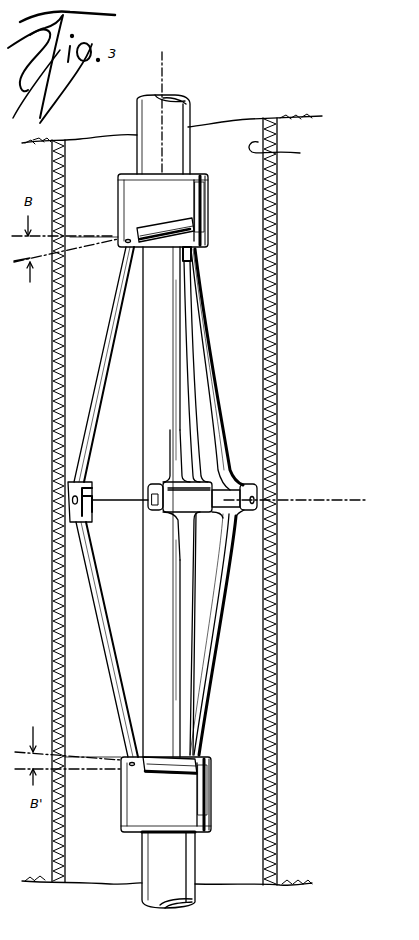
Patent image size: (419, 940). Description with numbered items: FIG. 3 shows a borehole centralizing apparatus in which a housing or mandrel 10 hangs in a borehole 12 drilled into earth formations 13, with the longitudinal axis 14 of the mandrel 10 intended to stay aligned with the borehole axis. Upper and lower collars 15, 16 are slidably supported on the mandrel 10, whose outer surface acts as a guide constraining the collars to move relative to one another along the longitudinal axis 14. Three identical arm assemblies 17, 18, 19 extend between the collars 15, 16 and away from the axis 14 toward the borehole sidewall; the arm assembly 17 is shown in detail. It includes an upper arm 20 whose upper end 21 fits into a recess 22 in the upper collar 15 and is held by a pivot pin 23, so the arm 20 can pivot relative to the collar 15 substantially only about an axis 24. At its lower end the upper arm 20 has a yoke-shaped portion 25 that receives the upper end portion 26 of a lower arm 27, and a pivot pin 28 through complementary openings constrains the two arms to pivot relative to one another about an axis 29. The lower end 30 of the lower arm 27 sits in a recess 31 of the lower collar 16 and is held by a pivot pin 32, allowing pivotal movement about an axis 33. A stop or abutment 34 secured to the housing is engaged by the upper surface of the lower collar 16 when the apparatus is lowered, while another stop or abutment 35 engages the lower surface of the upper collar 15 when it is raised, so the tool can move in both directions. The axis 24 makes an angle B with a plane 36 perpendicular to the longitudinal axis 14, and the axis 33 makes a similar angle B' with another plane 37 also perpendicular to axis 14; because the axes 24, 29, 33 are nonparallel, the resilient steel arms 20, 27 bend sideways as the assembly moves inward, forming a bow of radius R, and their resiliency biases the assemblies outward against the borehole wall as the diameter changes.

The housing or mandrel 10 is at (186, 100).
The borehole 12 is at (284, 152).
The earth formations 13 is at (300, 204).
The longitudinal axis 14 is at (164, 57).
The upper collar 15 is at (209, 193).
The lower collar 16 is at (212, 815).
The arm assembly 17 is at (178, 392).
The arm assembly 18 is at (98, 355).
The arm assembly 19 is at (230, 393).
The upper arm 20 is at (178, 302).
The upper end 21 is at (164, 228).
The recess 22 is at (153, 223).
The pivot pin 23 is at (205, 214).
The axis 24 is at (80, 248).
The yoke-shaped portion 25 is at (170, 478).
The upper end portion 26 is at (178, 517).
The lower arm 27 is at (186, 630).
The pivot pin 28 is at (148, 500).
The axis 29 is at (305, 500).
The lower end 30 is at (162, 776).
The recess 31 is at (173, 775).
The pivot pin 32 is at (210, 768).
The axis 33 is at (84, 758).
The stop or abutment 34 is at (200, 584).
The stop or abutment 35 is at (192, 258).
The plane 36 is at (80, 237).
The plane 37 is at (84, 770).
The radius R is at (178, 415).